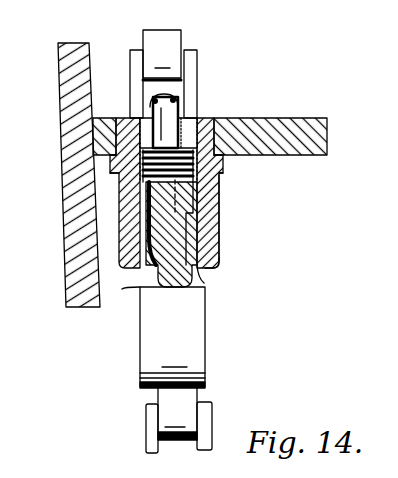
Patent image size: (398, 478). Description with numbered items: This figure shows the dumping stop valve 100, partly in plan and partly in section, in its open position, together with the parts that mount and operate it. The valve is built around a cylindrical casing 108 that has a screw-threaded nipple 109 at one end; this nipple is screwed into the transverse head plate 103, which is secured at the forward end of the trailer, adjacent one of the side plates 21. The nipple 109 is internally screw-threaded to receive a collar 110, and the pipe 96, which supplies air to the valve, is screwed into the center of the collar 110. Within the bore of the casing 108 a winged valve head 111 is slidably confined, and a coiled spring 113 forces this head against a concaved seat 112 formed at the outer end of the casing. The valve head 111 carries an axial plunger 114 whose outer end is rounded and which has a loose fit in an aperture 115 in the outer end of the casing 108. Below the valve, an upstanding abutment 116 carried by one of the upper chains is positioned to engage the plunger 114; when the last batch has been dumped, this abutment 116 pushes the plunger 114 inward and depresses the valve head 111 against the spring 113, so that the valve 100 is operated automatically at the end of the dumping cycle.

The side plate 21 is at (59, 60).
The pipe 96 is at (143, 108).
The dumping stop valve 100 is at (219, 233).
The head plate 103 is at (291, 118).
The cylindrical casing 108 is at (218, 193).
The screw-threaded nipple 109 is at (190, 130).
The collar 110 is at (200, 114).
The winged valve head 111 is at (200, 212).
The concaved seat 112 is at (218, 262).
The coiled spring 113 is at (219, 160).
The axial plunger 114 is at (122, 289).
The aperture 115 is at (202, 268).
The abutment 116 is at (152, 349).